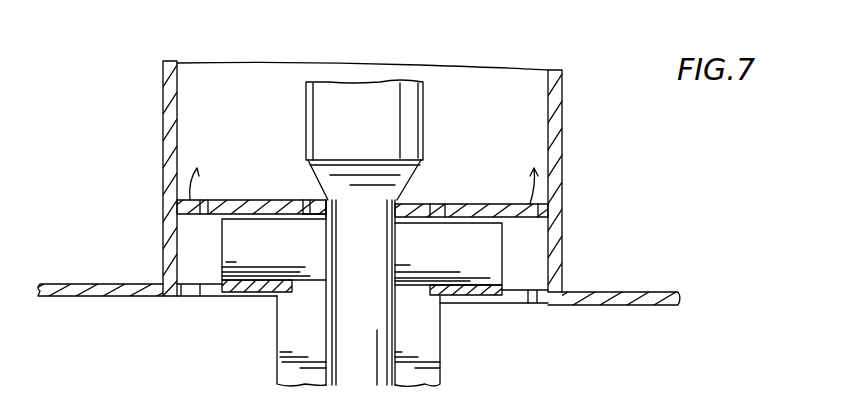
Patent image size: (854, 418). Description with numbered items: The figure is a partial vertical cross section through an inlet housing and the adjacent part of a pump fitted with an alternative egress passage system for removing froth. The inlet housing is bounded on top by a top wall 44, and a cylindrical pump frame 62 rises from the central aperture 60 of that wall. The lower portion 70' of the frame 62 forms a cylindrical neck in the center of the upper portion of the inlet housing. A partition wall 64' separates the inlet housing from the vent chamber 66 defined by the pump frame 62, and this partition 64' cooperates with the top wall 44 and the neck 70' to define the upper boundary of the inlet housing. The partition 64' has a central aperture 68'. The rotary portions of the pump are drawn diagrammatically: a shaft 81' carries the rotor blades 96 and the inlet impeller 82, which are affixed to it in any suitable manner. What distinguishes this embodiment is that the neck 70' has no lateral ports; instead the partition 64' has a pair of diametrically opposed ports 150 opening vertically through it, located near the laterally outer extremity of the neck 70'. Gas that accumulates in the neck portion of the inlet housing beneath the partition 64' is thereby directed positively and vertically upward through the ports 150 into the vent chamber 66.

The vent chamber 66 is at (182, 78).
The pump frame 62 is at (557, 111).
The top wall 44 is at (666, 298).
The central aperture 60 is at (180, 292).
The partition wall 64' is at (360, 189).
The ports 150 is at (201, 205).
The inlet impeller 82 is at (216, 253).
The lower portion of frame 70' is at (511, 250).
The central aperture 68' is at (297, 229).
The shaft 81' is at (417, 295).
The rotor blades 96 is at (283, 361).